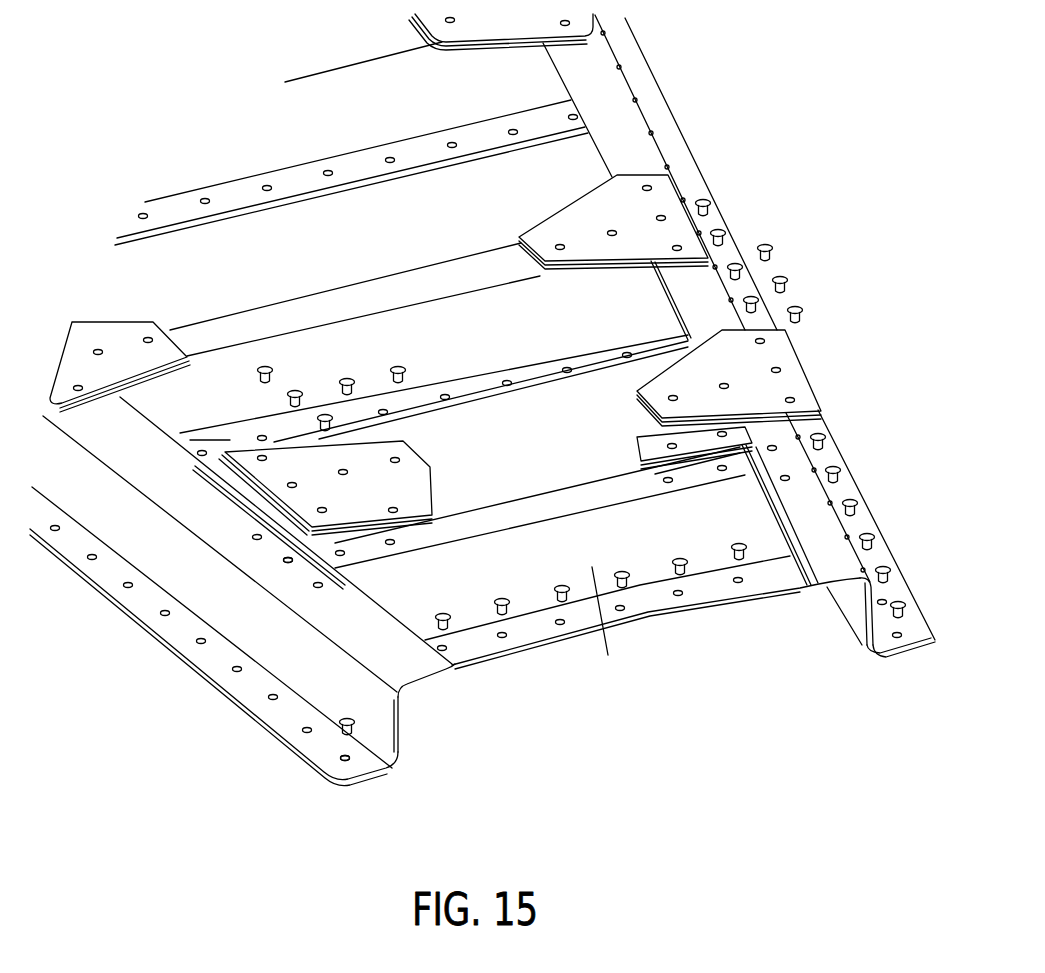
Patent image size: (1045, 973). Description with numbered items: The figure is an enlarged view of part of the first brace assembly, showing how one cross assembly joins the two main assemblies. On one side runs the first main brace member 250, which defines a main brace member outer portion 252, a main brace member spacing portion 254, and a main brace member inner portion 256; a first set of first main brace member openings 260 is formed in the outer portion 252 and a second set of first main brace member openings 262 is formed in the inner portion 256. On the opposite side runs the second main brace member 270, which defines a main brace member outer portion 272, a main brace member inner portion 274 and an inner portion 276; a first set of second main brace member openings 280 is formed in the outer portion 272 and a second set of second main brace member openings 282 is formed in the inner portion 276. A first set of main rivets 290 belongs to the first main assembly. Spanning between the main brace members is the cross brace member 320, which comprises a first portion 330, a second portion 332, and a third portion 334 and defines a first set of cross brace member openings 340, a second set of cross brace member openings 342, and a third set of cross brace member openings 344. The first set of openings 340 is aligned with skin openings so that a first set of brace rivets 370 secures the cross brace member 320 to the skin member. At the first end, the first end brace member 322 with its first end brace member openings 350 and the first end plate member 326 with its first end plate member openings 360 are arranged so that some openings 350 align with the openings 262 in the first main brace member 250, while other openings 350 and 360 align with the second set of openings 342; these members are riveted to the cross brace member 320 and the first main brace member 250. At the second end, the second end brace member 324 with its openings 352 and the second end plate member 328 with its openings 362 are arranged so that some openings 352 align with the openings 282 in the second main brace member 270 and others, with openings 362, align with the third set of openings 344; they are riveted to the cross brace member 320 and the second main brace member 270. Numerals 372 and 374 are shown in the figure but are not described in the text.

The first main brace member 250 is at (261, 622).
The main brace member outer portion 252 is at (243, 690).
The main brace member spacing portion 254 is at (372, 723).
The main brace member inner portion 256 is at (430, 668).
The first set of first main brace member openings 260 is at (368, 777).
The second set of first main brace member openings 262 is at (288, 563).
The second main brace member 270 is at (745, 376).
The main brace member outer portion 272 is at (910, 623).
The main brace member inner portion 274 is at (858, 612).
The second main brace member inner portion 276 is at (807, 590).
The first set of second main brace member openings 280 is at (897, 638).
The second set of second main brace member openings 282 is at (777, 448).
The first set of main rivets 290 is at (238, 402).
The cross brace member 320 is at (429, 386).
The first end brace member 322 is at (300, 497).
The second end brace member 324 is at (770, 369).
The first end plate member 326 is at (413, 510).
The second end plate member 328 is at (650, 442).
The first portion 330 is at (597, 576).
The second portion 332 is at (619, 636).
The third portion 334 is at (510, 520).
The first set of cross brace member openings 340 is at (392, 546).
The second set of cross brace member openings 342 is at (650, 470).
The third set of cross brace member openings 344 is at (680, 596).
The set of first end brace member openings 350 is at (262, 462).
The set of second end brace member openings 352 is at (780, 370).
The set of first end plate member openings 360 is at (351, 479).
The set of second end plate member openings 362 is at (695, 462).
The first set of brace rivets 370 is at (372, 355).
The gusset plate at frame junction 372 is at (650, 303).
The fastener on second stringer 374 is at (640, 600).